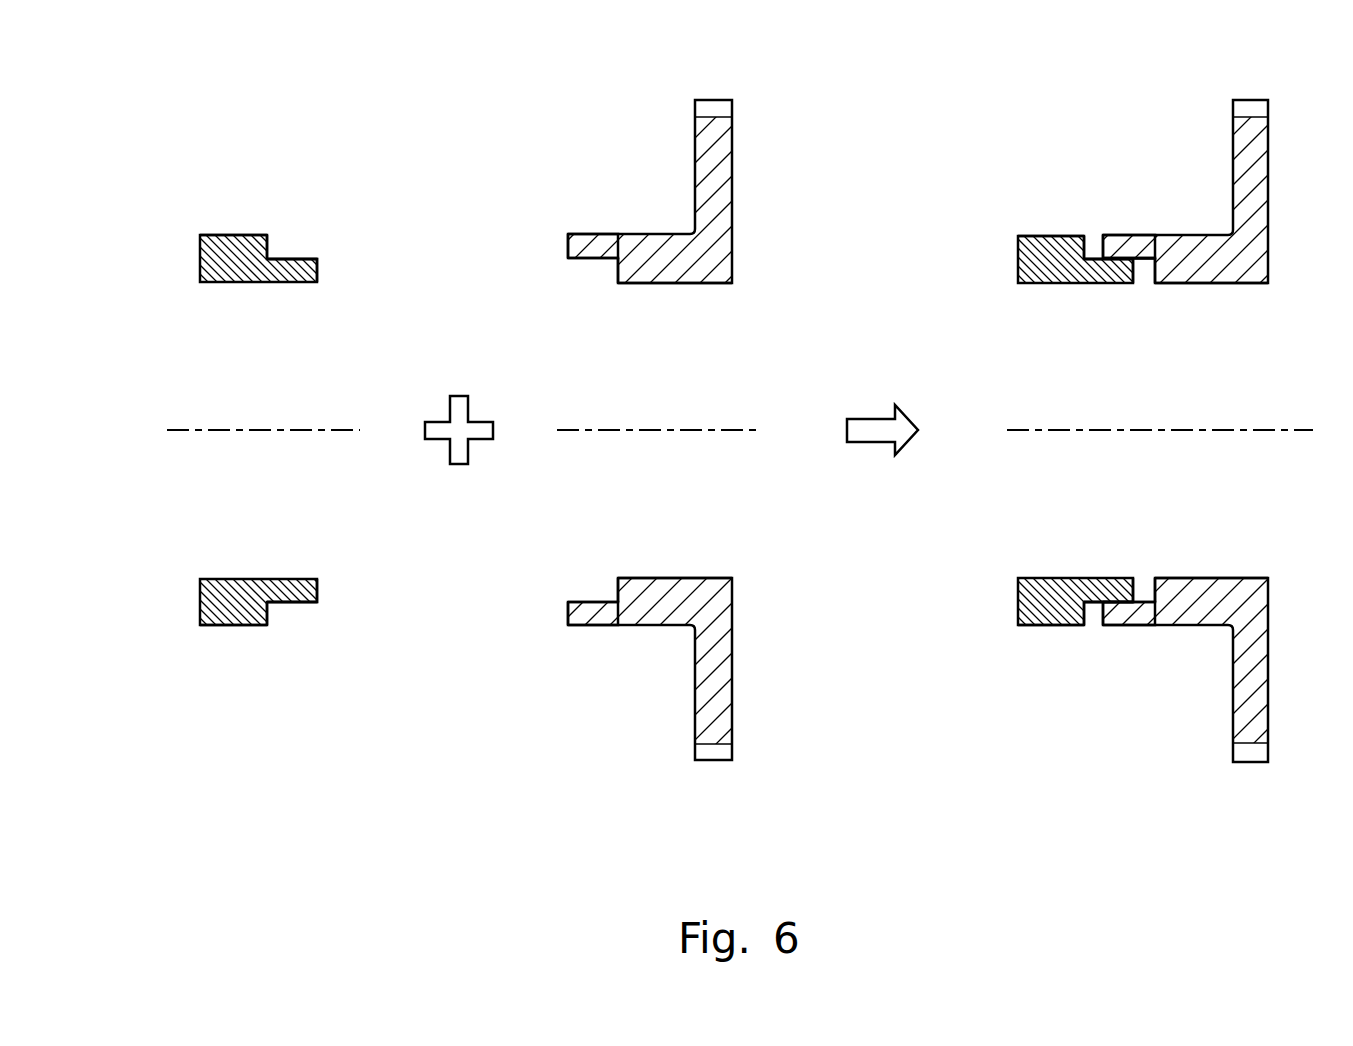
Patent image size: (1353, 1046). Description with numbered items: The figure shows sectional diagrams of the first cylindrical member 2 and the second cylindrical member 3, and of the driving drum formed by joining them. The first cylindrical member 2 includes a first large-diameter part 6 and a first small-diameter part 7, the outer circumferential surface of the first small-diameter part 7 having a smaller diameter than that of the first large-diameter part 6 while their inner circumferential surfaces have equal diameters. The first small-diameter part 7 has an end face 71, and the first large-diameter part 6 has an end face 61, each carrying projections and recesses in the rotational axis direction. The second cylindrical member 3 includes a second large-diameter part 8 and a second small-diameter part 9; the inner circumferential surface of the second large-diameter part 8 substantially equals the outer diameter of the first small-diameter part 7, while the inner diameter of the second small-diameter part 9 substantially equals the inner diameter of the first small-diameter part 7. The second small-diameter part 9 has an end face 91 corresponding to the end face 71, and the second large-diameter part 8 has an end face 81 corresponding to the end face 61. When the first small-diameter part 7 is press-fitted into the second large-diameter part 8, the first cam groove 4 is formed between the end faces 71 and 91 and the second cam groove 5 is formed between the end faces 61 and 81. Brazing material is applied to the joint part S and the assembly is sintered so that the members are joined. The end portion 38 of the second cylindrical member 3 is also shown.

The first cylindrical member 2 is at (199, 258).
The second cylindrical member 3 is at (732, 163).
The end portion of second member 38 is at (713, 105).
The first cam groove 4 is at (1158, 334).
The second cam groove 5 is at (1096, 163).
The first large-diameter part 6 is at (227, 235).
The end face of first large-diameter part 61 is at (267, 250).
The first small-diameter part 7 is at (293, 258).
The end face of first small-diameter part 71 is at (317, 270).
The second large-diameter part 8 is at (586, 262).
The end face of second large-diameter part 81 is at (568, 248).
The second small-diameter part 9 is at (681, 283).
The end face of second small-diameter part 91 is at (618, 270).
The joint part S is at (1128, 258).